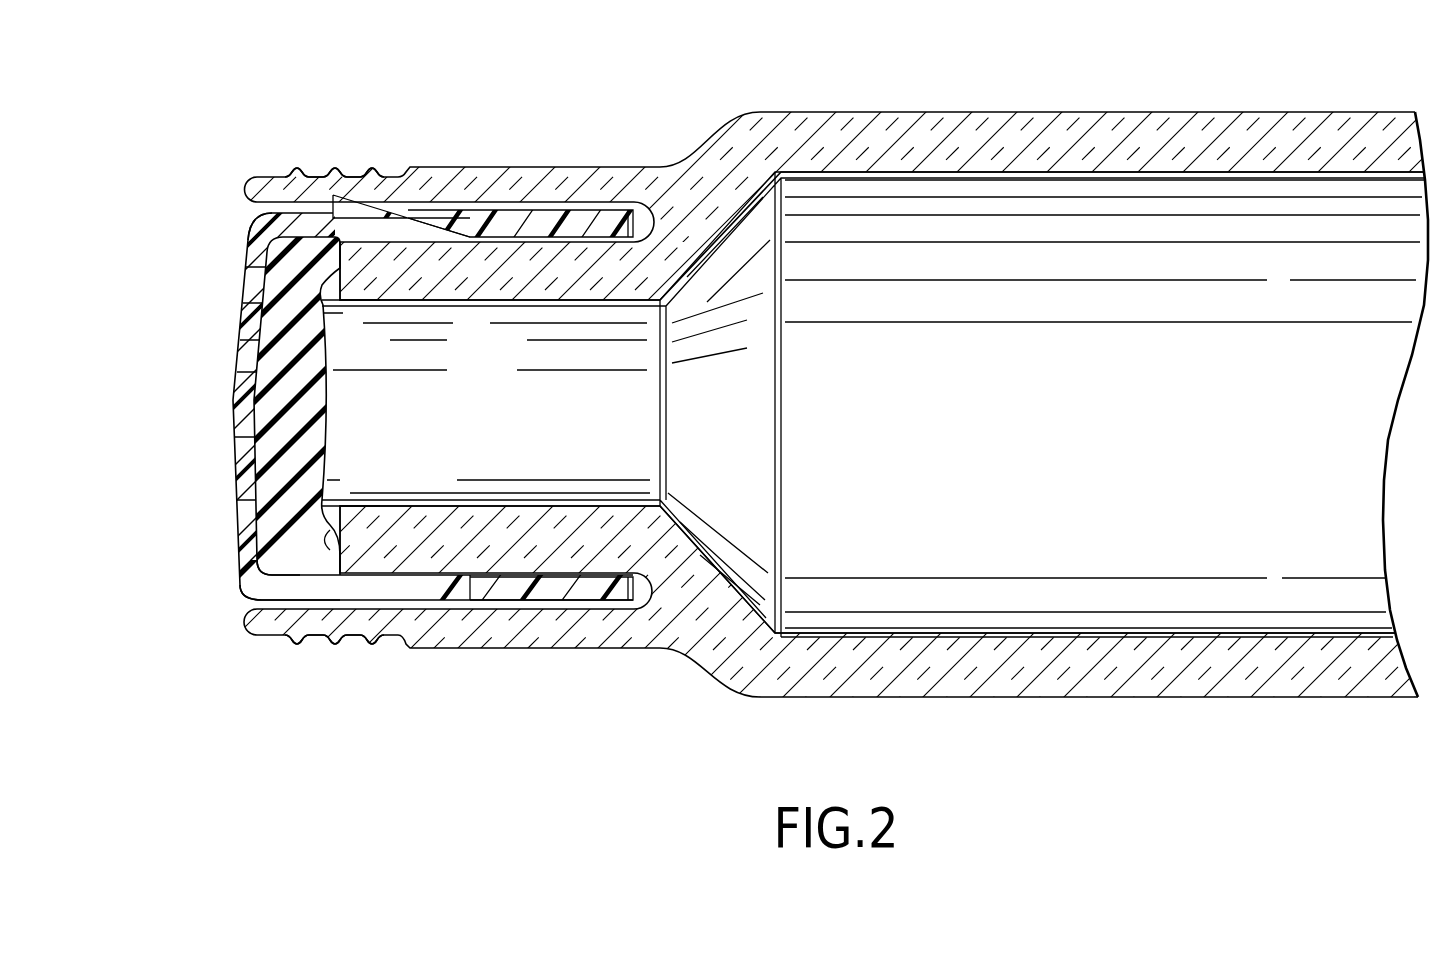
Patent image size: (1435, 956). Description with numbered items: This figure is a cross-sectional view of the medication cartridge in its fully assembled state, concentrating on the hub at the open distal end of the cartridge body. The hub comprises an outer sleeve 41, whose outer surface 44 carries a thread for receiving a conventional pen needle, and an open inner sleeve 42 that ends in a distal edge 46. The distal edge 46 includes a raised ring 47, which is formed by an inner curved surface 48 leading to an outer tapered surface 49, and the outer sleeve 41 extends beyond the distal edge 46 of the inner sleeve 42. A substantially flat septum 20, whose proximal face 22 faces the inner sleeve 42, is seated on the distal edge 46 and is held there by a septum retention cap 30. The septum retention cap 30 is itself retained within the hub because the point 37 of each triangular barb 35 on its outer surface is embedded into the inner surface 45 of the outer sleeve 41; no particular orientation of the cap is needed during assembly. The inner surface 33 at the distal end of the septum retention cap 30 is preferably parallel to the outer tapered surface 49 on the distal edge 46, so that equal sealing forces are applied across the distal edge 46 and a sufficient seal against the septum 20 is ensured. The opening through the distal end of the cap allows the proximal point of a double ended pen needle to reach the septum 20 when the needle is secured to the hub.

The septum 20 is at (277, 481).
The proximal face 22 is at (329, 395).
The septum retention cap 30 is at (233, 340).
The inner surface 33 is at (260, 579).
The triangular barbs 35 is at (408, 214).
The point 37 is at (352, 182).
The outer sleeve 41 is at (418, 206).
The inner sleeve 42 is at (488, 312).
The outer surface 44 is at (535, 167).
The inner surface 45 is at (256, 207).
The distal edge 46 is at (338, 306).
The raised ring 47 is at (283, 541).
The inner curved surface 48 is at (335, 504).
The outer tapered surface 49 is at (322, 530).